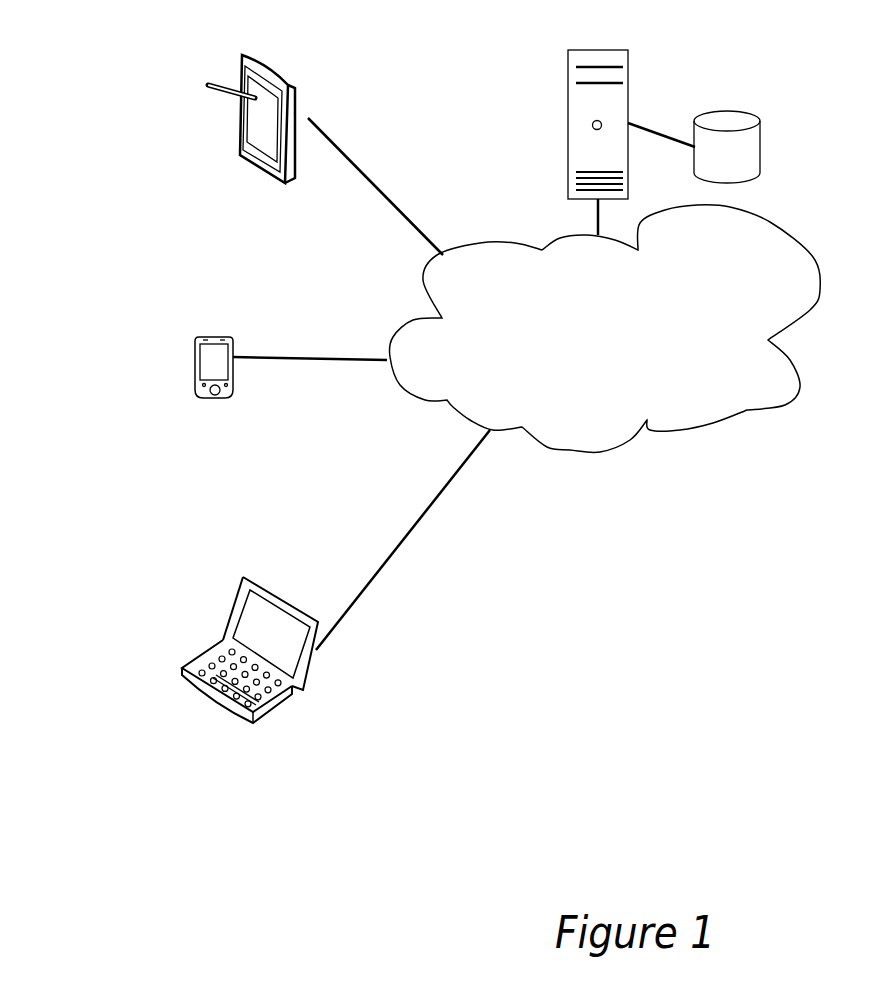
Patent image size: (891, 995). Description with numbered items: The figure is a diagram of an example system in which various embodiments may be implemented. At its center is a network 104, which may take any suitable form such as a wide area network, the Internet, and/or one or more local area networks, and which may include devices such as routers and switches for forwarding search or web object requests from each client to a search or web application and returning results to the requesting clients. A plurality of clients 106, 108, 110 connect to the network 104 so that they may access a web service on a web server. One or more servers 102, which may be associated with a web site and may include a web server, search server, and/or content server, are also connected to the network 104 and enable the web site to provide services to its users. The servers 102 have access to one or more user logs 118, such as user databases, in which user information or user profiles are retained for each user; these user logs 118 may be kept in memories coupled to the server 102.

The servers 102 is at (632, 75).
The network 104 is at (604, 329).
The client 106 is at (205, 100).
The client 108 is at (188, 352).
The client 110 is at (205, 637).
The user logs 118 is at (772, 147).